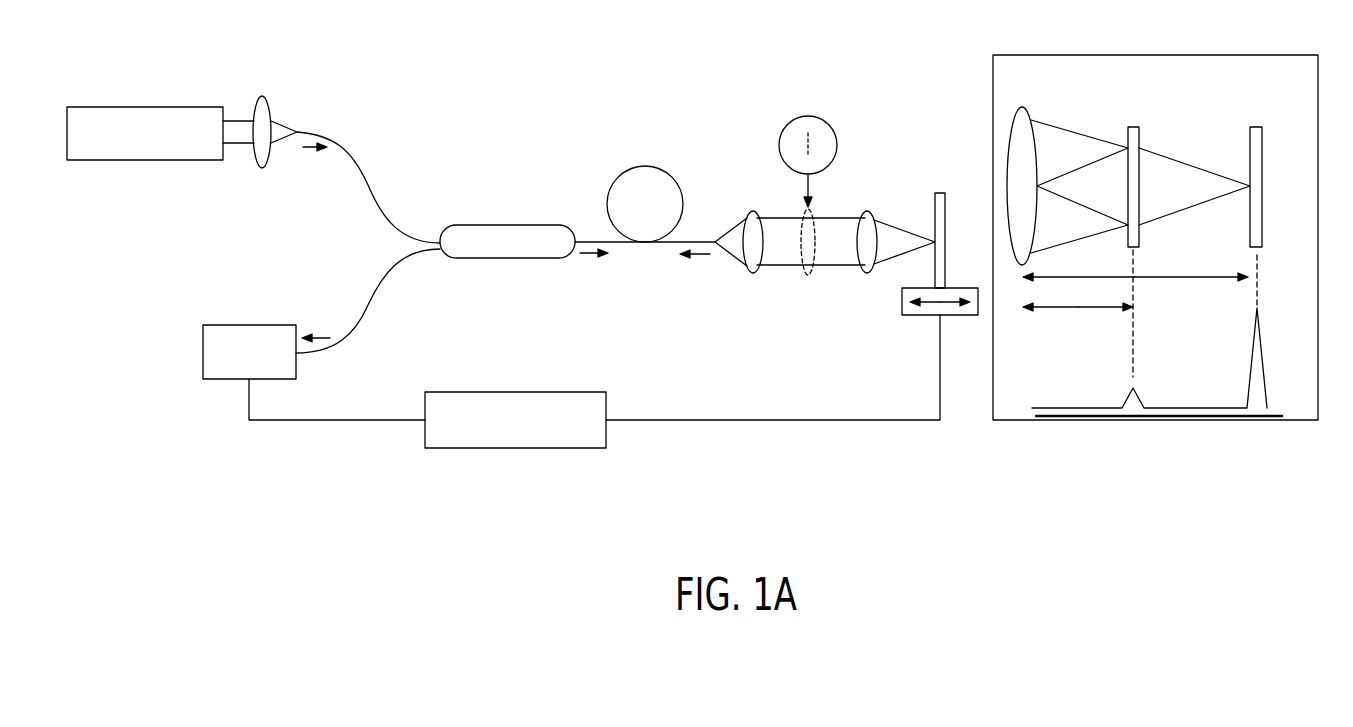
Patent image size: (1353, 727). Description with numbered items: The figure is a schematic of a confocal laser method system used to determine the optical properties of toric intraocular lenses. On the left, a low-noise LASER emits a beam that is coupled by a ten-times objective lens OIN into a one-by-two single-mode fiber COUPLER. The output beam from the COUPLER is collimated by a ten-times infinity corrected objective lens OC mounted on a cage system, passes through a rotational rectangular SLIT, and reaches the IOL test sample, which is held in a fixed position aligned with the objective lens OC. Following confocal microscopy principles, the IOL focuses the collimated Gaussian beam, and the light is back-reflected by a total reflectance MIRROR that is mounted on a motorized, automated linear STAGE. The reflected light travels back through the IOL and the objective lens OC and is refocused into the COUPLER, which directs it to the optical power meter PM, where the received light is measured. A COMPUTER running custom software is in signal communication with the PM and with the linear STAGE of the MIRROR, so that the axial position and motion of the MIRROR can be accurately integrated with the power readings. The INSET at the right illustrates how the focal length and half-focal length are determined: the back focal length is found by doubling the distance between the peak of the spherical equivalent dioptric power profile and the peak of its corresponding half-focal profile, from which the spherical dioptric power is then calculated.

The laser LASER is at (145, 133).
The objective lens O_in OIN is at (275, 115).
The single-mode fiber coupler COUPLER is at (507, 205).
The objective lens O_C OC is at (739, 224).
The rotational rectangular slit SLIT is at (809, 168).
The IOL test sample IOL is at (894, 226).
The total reflectance mirror MIRROR is at (939, 222).
The linear stage STAGE is at (925, 335).
The power meter PM is at (249, 352).
The computing system COMPUTER is at (515, 420).
The focal length schematic INSET is at (1155, 237).